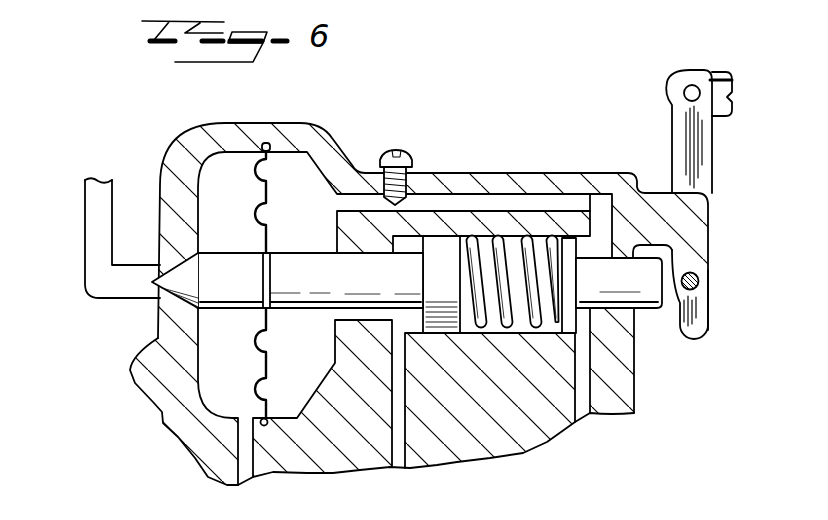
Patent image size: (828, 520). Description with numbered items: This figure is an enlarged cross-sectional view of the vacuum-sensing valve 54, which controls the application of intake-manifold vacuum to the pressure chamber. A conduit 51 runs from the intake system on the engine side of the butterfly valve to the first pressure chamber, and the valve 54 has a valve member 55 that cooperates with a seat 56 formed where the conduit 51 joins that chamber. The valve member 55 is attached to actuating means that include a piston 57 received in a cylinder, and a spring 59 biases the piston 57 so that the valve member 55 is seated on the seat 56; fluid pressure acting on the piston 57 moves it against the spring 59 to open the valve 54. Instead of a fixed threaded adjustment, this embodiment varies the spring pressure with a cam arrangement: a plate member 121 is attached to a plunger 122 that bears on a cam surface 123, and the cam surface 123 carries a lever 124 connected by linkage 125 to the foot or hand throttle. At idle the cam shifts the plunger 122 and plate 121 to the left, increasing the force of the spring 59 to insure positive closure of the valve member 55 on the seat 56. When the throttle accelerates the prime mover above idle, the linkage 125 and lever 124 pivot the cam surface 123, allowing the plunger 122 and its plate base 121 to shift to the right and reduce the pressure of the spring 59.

The conduit 51 is at (86, 217).
The valve 54 is at (354, 132).
The valve member 55 is at (230, 312).
The seat 56 is at (194, 266).
The piston 57 is at (443, 245).
The spring 59 is at (498, 246).
The plate member 121 is at (567, 248).
The plunger 122 is at (646, 296).
The cam surface 123 is at (678, 335).
The lever 124 is at (703, 153).
The linkage 125 is at (717, 72).